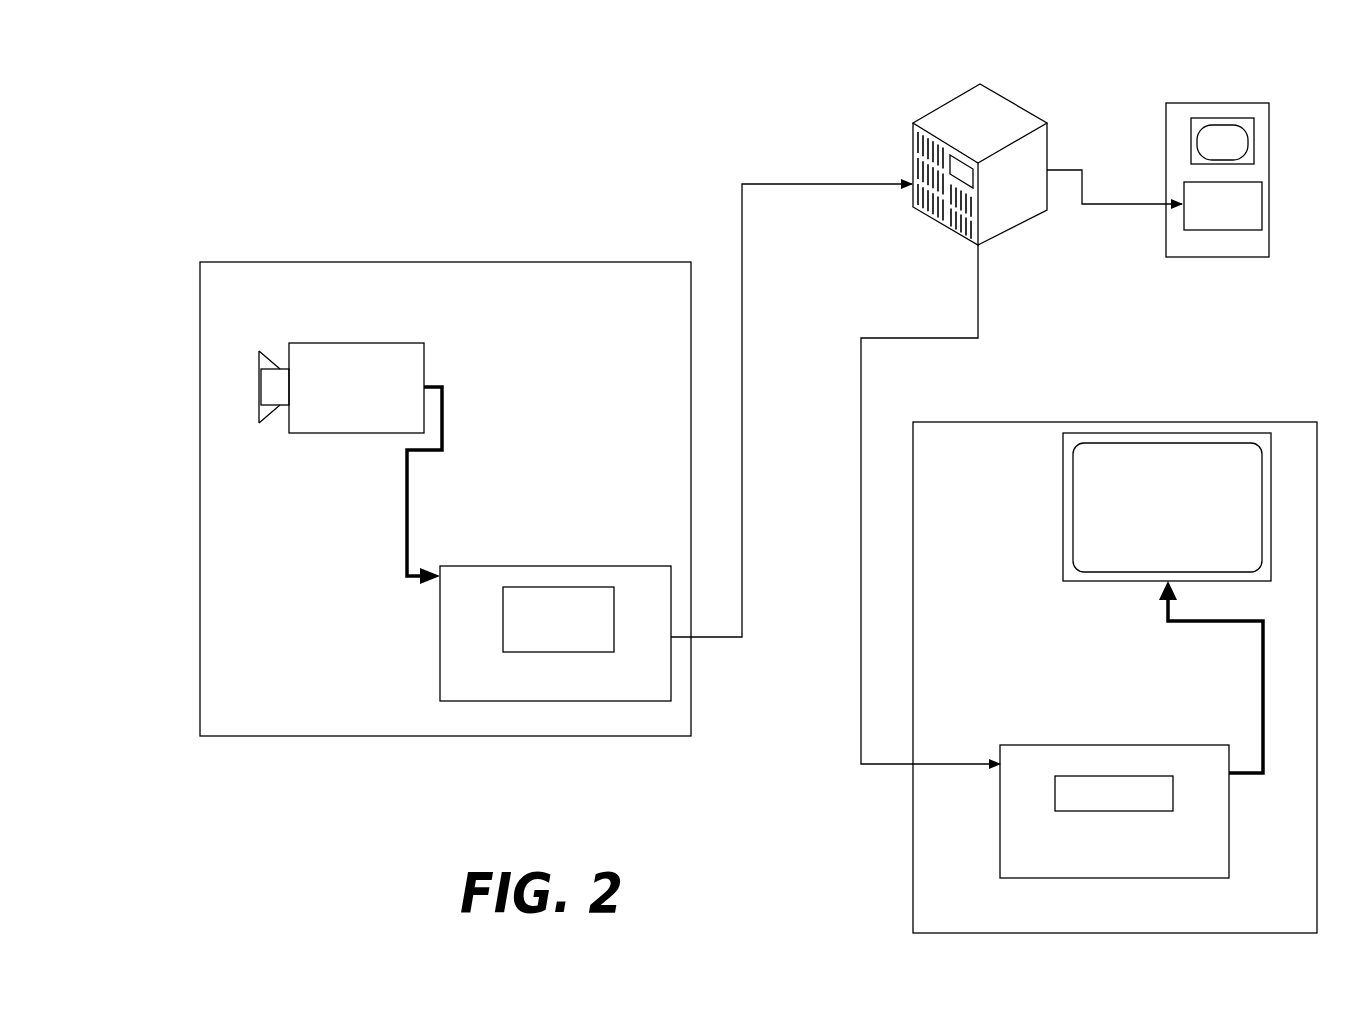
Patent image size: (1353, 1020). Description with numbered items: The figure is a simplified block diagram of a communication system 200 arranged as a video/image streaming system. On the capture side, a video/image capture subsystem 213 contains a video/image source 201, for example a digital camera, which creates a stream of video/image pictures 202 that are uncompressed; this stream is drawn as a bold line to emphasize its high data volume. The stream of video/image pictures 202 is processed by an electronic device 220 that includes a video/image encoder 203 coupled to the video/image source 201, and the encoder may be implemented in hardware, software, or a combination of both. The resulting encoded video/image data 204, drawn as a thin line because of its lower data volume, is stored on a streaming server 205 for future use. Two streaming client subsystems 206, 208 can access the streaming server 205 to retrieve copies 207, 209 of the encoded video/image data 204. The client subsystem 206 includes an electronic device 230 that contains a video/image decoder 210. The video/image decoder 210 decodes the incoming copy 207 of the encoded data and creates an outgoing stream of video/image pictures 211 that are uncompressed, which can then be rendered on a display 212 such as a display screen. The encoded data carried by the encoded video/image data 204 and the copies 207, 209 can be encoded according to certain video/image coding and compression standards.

The communication system 200 is at (1148, 53).
The video/image source 201 is at (353, 342).
The stream of video/image pictures 202 is at (405, 516).
The video/image encoder 203 is at (579, 650).
The encoded video/image data 204 is at (741, 223).
The streaming server 205 is at (913, 145).
The client subsystem 206 is at (912, 906).
The copy of encoded video/image data 207 is at (860, 580).
The client subsystem 208 is at (1270, 158).
The copy of encoded video/image data 209 is at (1112, 207).
The video/image decoder 210 is at (1129, 808).
The outgoing stream of video/image pictures 211 is at (1262, 684).
The display 212 is at (1063, 510).
The video/image capture subsystem 213 is at (343, 737).
The electronic device 220 is at (554, 565).
The electronic device 230 is at (1000, 847).